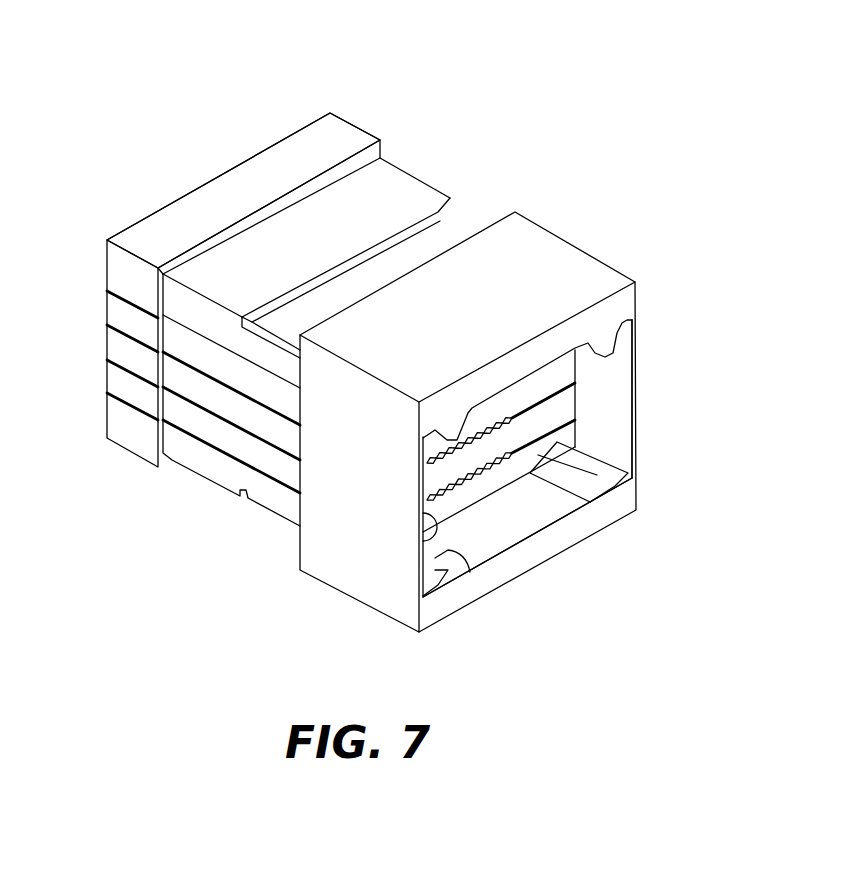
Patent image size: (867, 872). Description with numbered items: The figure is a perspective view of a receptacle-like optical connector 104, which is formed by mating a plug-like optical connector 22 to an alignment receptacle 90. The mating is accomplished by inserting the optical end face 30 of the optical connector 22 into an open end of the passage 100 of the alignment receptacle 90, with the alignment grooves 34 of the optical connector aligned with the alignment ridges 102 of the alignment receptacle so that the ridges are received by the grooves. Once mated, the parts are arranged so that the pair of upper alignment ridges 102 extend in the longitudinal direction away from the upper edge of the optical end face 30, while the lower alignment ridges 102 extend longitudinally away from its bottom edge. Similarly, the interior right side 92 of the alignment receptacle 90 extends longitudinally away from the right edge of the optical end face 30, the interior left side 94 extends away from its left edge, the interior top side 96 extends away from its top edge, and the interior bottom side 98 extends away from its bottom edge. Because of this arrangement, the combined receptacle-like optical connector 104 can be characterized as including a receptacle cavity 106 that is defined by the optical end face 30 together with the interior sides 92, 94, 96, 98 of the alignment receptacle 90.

The receptacle-like optical connector 104 is at (380, 60).
The plug-like optical connector 22 is at (412, 160).
The alignment grooves 34 is at (268, 313).
The alignment receptacle 90 is at (611, 226).
The interior top side 96 is at (513, 388).
The alignment ridges 102 is at (605, 356).
The optical end face 30 is at (548, 412).
The interior right side 92 is at (607, 442).
The receptacle cavity 106 is at (606, 480).
The interior bottom side 98 is at (559, 512).
The passage 100 is at (495, 542).
The interior left side 94 is at (418, 546).